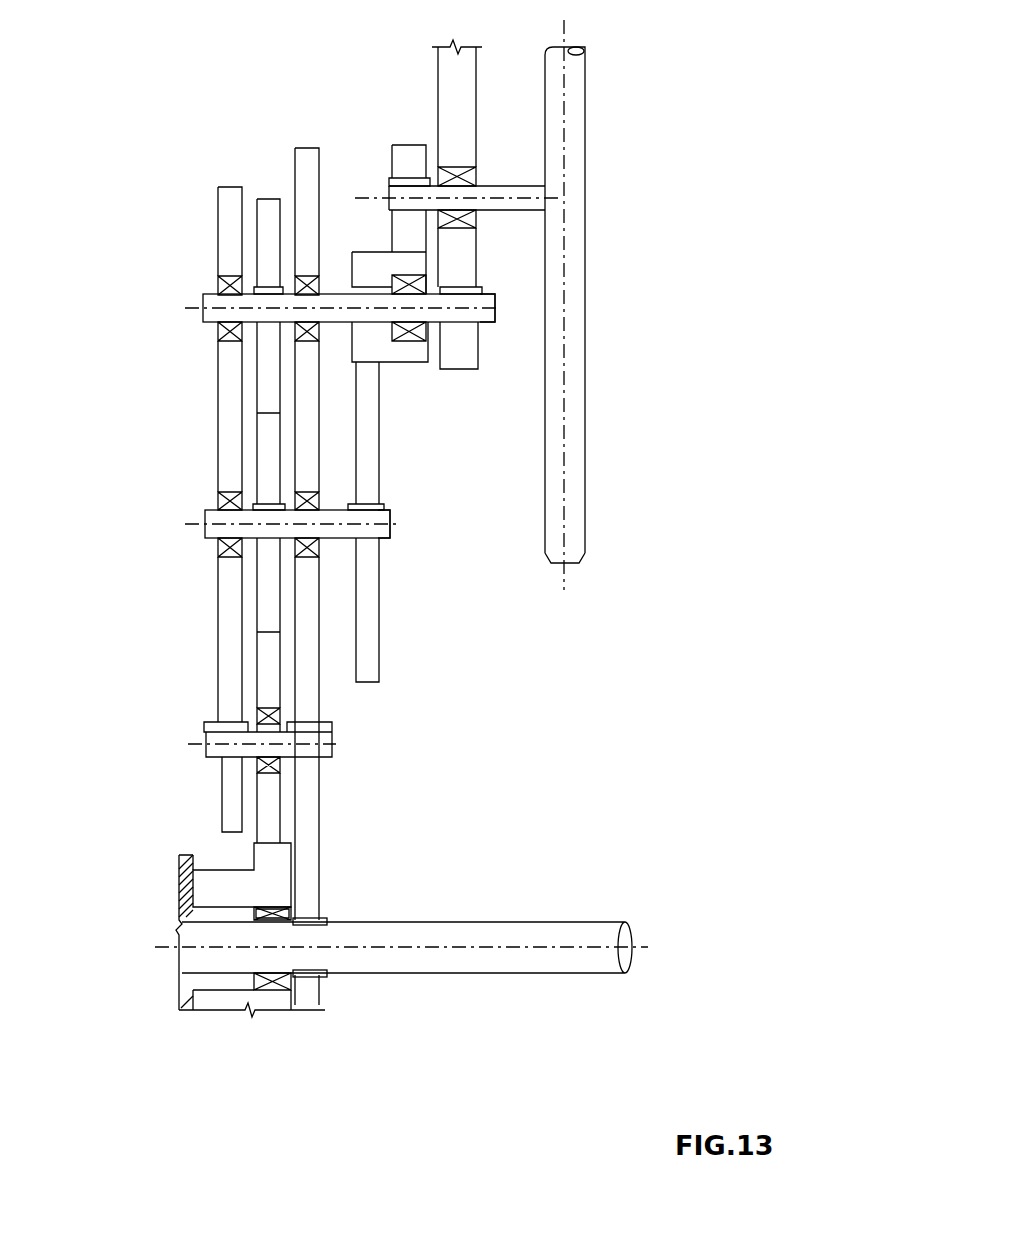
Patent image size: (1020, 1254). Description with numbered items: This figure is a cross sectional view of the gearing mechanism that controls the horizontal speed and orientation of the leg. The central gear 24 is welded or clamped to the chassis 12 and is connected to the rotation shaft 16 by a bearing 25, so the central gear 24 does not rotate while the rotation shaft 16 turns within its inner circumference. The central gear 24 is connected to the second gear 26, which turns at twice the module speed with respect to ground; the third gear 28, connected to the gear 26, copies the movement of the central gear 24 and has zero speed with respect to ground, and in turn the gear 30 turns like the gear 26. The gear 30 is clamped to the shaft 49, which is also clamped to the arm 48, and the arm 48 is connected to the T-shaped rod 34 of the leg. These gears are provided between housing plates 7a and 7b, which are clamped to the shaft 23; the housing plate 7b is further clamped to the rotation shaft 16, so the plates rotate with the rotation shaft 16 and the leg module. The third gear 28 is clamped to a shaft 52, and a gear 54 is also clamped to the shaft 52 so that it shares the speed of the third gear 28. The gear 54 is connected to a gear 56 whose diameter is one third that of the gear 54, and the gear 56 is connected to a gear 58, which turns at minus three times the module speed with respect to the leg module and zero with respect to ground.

The housing plate 7a is at (226, 190).
The housing plate 7b is at (306, 155).
The chassis 12 is at (183, 997).
The rotation shaft 16 is at (597, 932).
The shaft 23 is at (210, 747).
The central gear 24 is at (283, 997).
The bearing 25 is at (272, 920).
The second gear 26 is at (273, 805).
The third gear 28 is at (263, 600).
The gear 30 is at (265, 375).
The T-shaped rod 34 is at (557, 200).
The arm 48 is at (448, 72).
The shaft 49 is at (480, 298).
The shaft 52 is at (380, 525).
The gear 54 is at (362, 440).
The gear 56 is at (388, 267).
The gear 58 is at (397, 227).